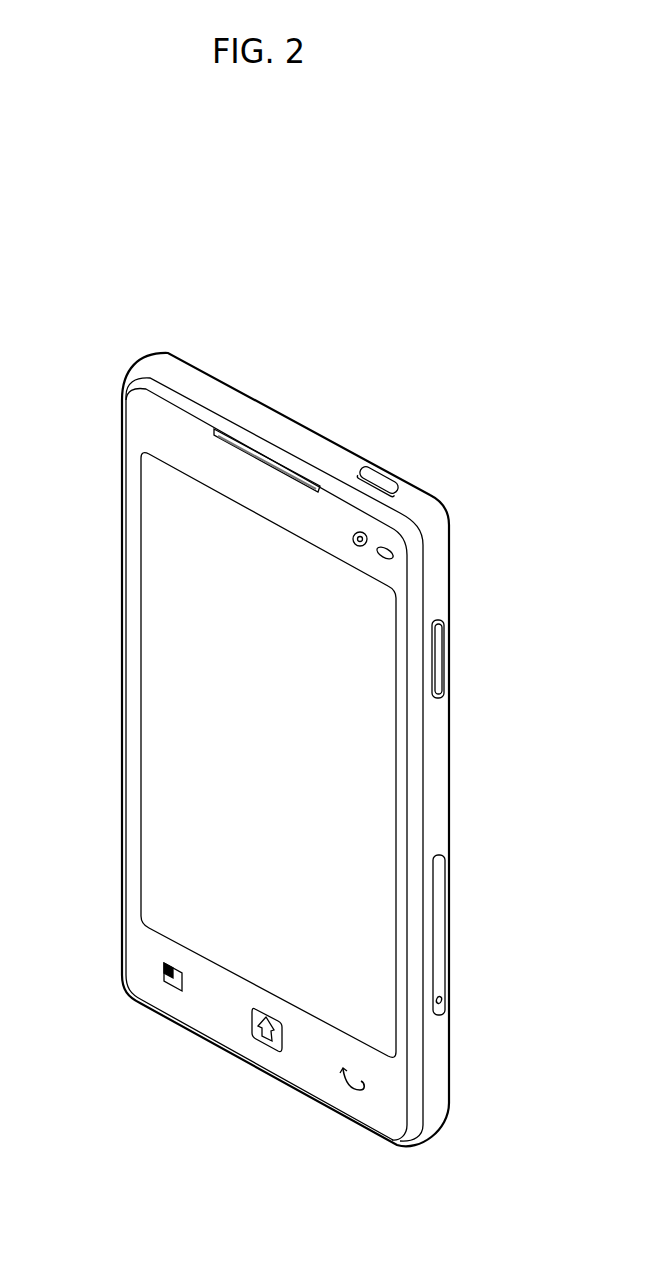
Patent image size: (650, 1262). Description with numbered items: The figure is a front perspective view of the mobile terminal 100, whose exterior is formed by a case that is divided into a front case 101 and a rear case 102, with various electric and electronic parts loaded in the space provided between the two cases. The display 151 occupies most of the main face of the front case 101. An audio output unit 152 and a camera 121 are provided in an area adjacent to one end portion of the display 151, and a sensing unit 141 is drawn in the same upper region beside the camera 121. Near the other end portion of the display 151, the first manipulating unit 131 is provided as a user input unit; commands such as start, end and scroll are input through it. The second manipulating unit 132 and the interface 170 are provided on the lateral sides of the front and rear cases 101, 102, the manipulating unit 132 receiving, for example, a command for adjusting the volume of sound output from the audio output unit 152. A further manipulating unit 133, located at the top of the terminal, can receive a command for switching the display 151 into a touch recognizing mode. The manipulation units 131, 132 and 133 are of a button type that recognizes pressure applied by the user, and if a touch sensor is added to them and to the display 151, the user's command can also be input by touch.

The mobile terminal 100 is at (119, 286).
The front case 101 is at (417, 1097).
The rear case 102 is at (440, 528).
The camera 121 is at (367, 539).
The first manipulating unit 131 is at (262, 1039).
The second manipulating unit 132 is at (438, 661).
The second manipulating unit 133 is at (380, 483).
The sensing unit 141 is at (393, 556).
The display 151 is at (157, 717).
The audio output unit 152 is at (263, 457).
The interface unit 170 is at (440, 937).